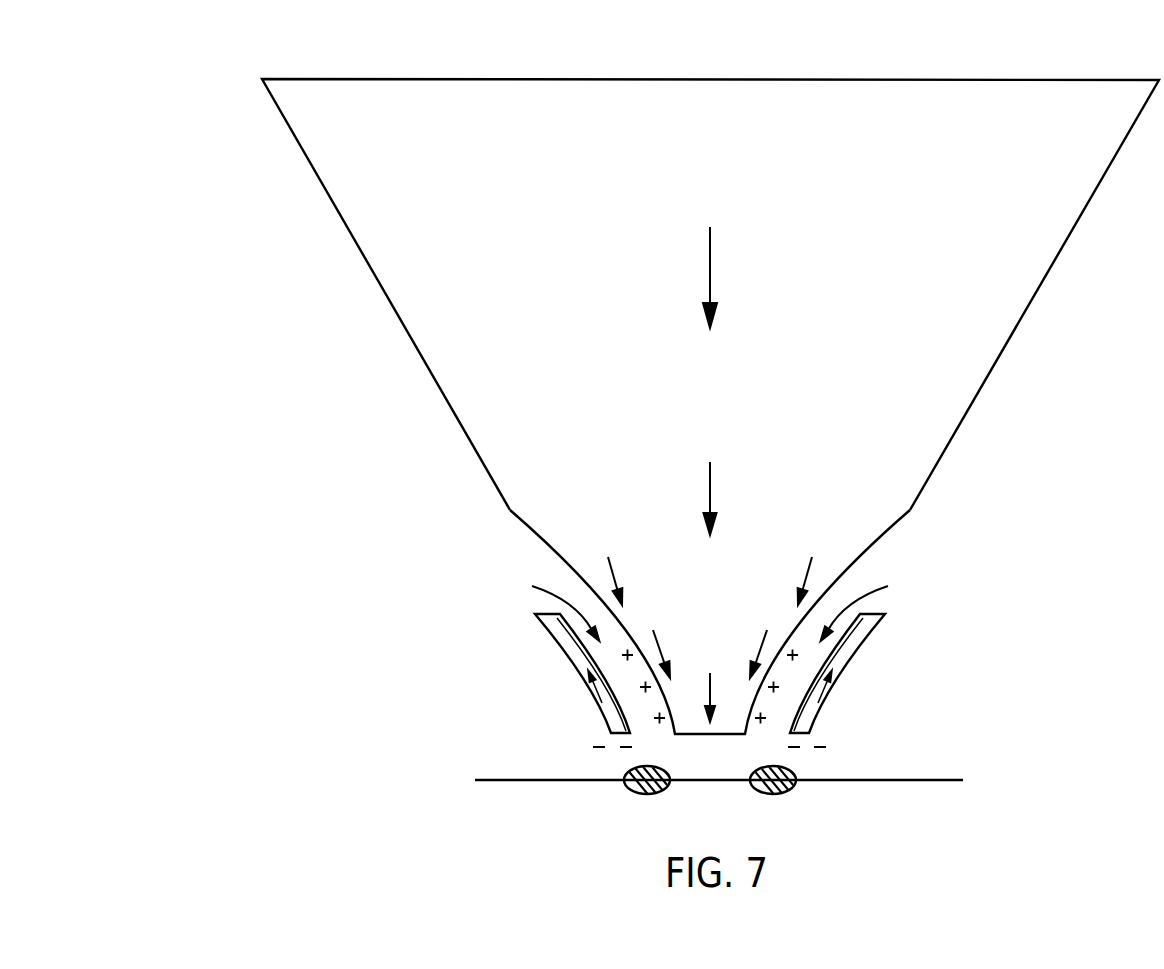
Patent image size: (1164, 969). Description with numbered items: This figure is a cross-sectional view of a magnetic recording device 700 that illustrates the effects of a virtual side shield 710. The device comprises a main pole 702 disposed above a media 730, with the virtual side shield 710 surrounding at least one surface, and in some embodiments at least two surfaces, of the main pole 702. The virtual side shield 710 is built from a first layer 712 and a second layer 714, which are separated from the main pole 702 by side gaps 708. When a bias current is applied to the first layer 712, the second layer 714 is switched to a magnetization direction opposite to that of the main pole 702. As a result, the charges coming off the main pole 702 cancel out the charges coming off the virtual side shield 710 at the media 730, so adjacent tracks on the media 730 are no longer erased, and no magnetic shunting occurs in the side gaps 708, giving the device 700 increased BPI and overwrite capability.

The magnetic recording device 700 is at (246, 46).
The main pole 702 is at (728, 597).
The side gaps 708 is at (711, 606).
The virtual side shield 710 is at (545, 668).
The first layer 712 is at (798, 710).
The second layer 714 is at (858, 647).
The media 730 is at (777, 796).